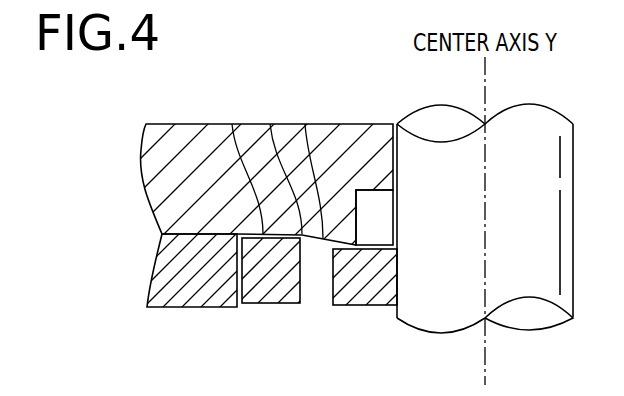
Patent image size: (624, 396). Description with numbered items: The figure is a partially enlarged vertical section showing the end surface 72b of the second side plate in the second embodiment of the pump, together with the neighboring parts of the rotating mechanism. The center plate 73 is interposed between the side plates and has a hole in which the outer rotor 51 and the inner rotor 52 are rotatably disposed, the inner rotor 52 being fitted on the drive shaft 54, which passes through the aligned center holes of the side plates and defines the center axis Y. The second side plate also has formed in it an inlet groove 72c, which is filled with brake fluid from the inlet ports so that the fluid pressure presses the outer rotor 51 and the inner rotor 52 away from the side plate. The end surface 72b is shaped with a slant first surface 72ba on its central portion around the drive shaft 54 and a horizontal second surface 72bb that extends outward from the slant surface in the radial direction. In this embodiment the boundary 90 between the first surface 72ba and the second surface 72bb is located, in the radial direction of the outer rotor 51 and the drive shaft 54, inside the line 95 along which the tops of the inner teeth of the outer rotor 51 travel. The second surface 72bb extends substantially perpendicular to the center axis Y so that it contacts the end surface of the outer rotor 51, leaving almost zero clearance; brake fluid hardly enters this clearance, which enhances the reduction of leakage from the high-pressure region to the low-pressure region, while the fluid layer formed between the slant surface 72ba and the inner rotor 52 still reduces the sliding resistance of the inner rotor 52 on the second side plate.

The end surface 72b is at (335, 71).
The horizontal surface 72bb is at (232, 124).
The slant surface 72ba is at (305, 124).
The inlet groove 72c is at (370, 207).
The boundary 90 is at (270, 124).
The center plate 73 is at (173, 263).
The outer rotor 51 is at (265, 297).
The inner rotor 52 is at (357, 292).
The line along which the tops of the inner teeth travel 95 is at (302, 270).
The drive shaft 54 is at (538, 143).